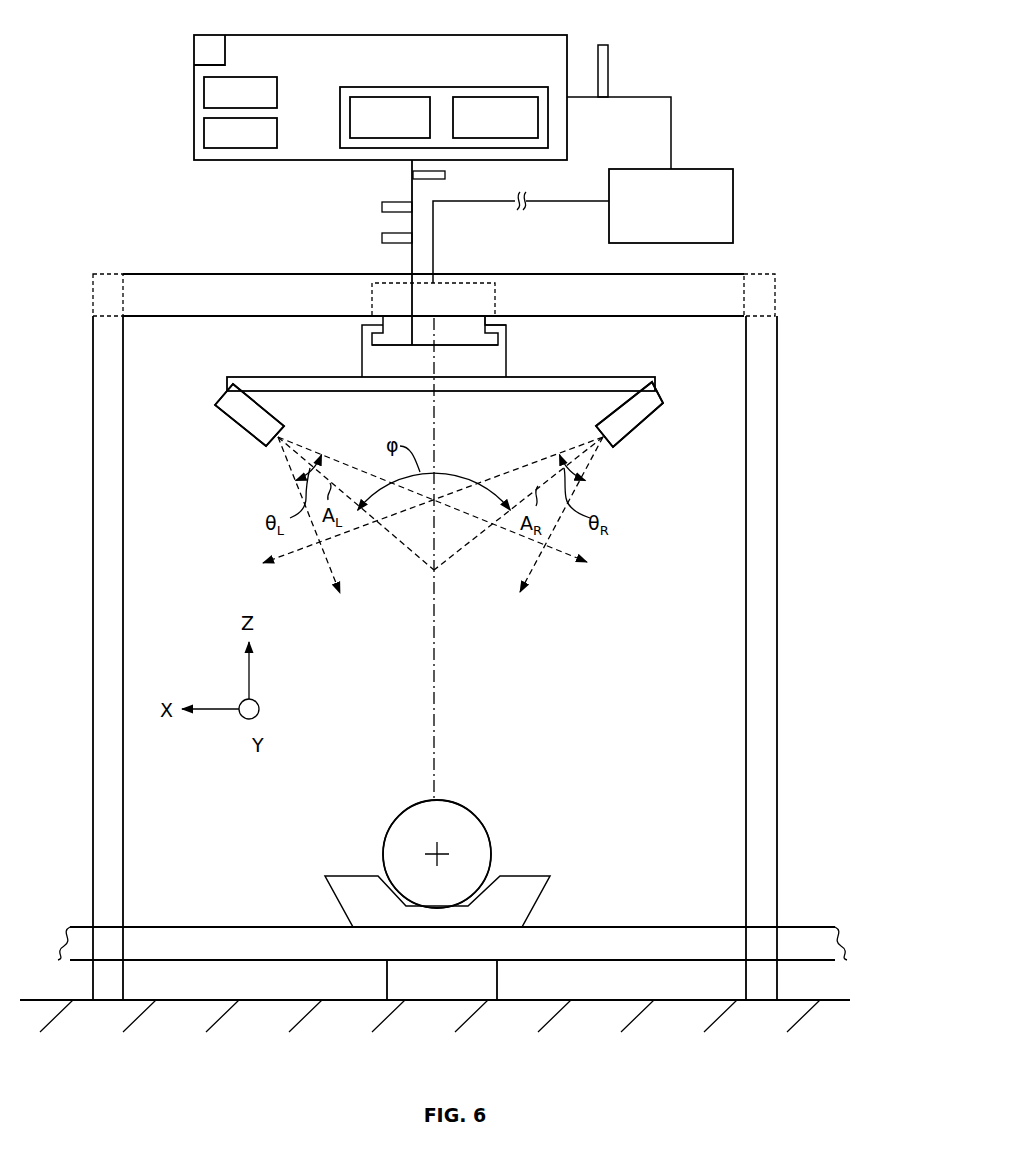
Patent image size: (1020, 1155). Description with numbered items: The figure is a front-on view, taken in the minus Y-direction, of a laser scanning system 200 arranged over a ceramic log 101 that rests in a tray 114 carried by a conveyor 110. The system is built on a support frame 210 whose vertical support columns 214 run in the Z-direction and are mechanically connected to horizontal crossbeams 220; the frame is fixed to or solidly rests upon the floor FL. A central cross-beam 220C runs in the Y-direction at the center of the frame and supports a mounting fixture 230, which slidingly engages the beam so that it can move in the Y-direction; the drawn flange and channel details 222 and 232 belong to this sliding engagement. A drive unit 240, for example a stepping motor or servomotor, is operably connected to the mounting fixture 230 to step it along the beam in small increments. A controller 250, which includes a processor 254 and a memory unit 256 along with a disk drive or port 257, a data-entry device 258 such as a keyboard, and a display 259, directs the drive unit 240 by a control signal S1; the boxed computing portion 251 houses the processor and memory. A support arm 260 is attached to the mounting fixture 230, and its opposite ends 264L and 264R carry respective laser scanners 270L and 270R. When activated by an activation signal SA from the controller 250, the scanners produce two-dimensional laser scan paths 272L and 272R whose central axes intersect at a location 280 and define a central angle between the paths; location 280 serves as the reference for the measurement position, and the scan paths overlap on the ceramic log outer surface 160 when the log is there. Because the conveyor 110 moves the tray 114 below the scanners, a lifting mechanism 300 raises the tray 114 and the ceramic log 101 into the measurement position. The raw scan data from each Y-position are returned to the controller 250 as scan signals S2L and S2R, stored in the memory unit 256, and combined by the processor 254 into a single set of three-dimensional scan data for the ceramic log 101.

The laser scanning system 200 is at (752, 105).
The support frame 210 is at (268, 262).
The vertical support columns 214 is at (746, 678).
The horizontal crossbeams 220 is at (107, 283).
The central cross-beam 220C is at (373, 290).
The slot 222 is at (455, 337).
The mounting fixture 230 is at (362, 357).
The bracket arm 232 is at (498, 328).
The drive unit 240 is at (653, 213).
The controller 250 is at (423, 68).
The processing module 251 is at (358, 87).
The processor 254 is at (374, 130).
The memory unit 256 is at (478, 130).
The disk drive or port 257 is at (194, 52).
The data-entry device 258 is at (204, 92).
The display 259 is at (204, 128).
The support arm 260 is at (465, 392).
The left end of support arm 264L is at (228, 383).
The right end of support arm 264R is at (655, 385).
The left laser scanner 270L is at (238, 432).
The right laser scanner 270R is at (640, 430).
The left two-dimensional laser scan path 272L is at (290, 493).
The right two-dimensional laser scan path 272R is at (580, 495).
The location 280 is at (422, 580).
The ceramic log 101 is at (477, 812).
The ceramic log outer surface 160 is at (404, 810).
The conveyor 110 is at (551, 926).
The tray 114 is at (341, 905).
The lifting mechanism 300 is at (383, 979).
The floor FL is at (593, 1000).
The control signal S1 is at (608, 60).
The activation signal SA is at (445, 175).
The right scan signal S2R is at (382, 207).
The left scan signal S2L is at (382, 238).